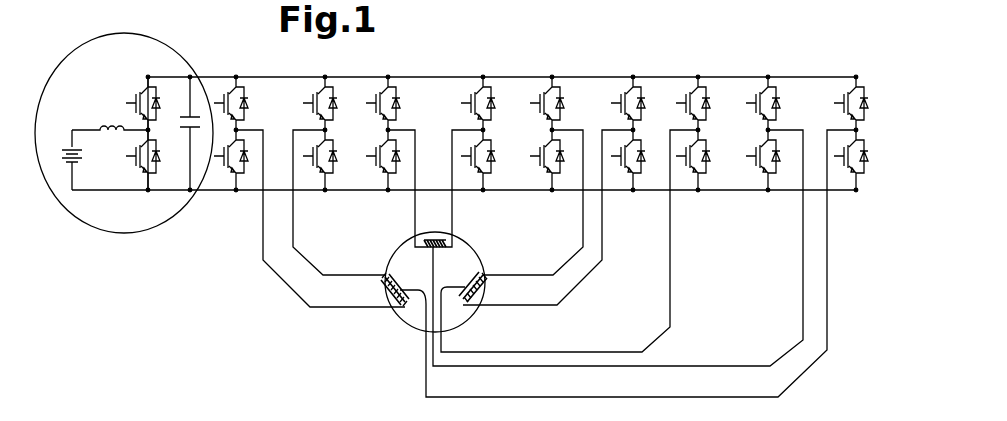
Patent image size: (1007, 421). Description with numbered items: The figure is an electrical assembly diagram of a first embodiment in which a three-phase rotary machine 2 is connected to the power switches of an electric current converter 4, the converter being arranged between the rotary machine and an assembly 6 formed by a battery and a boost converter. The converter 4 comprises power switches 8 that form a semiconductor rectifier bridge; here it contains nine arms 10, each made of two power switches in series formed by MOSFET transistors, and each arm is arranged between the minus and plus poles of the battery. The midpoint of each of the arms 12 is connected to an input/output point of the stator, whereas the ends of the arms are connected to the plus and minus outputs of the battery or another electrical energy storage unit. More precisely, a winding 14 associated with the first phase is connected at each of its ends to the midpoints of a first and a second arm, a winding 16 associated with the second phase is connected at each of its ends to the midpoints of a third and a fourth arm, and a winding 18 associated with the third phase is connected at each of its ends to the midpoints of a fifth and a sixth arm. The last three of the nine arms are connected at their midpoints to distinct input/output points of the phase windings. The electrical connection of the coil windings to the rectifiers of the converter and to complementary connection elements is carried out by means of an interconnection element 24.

The rotary machine 2 is at (430, 310).
The electric current converter 4 is at (482, 198).
The assembly formed by a battery and a boost converter 6 is at (70, 220).
The power switches 8 is at (229, 165).
The arms 10 is at (700, 165).
The midpoint of the arms 12 is at (856, 130).
The winding 14 is at (385, 281).
The winding 16 is at (428, 244).
The winding 18 is at (485, 287).
The interconnection element 24 is at (462, 240).